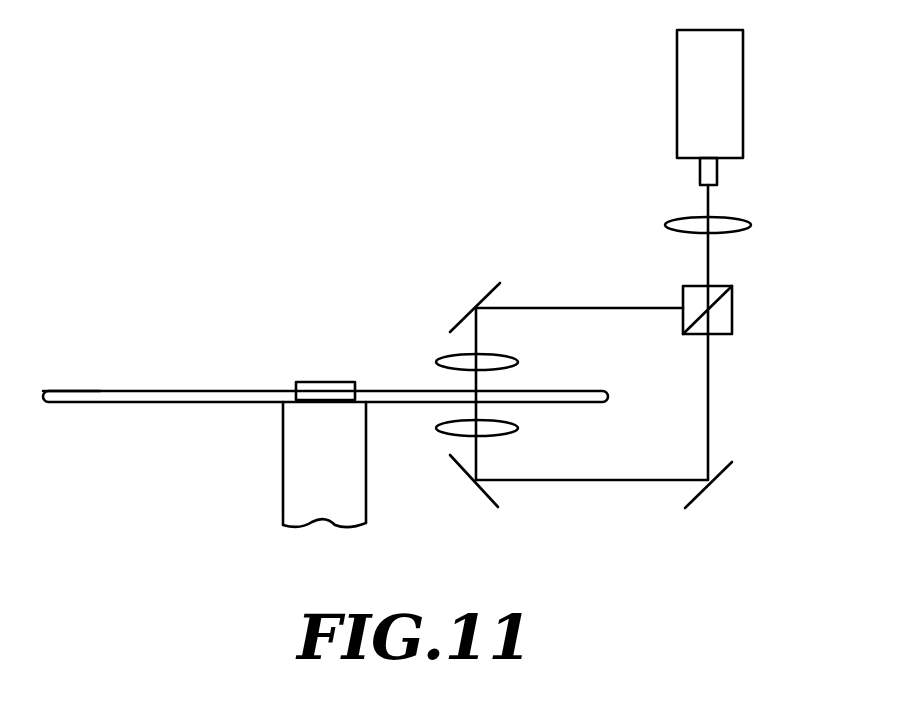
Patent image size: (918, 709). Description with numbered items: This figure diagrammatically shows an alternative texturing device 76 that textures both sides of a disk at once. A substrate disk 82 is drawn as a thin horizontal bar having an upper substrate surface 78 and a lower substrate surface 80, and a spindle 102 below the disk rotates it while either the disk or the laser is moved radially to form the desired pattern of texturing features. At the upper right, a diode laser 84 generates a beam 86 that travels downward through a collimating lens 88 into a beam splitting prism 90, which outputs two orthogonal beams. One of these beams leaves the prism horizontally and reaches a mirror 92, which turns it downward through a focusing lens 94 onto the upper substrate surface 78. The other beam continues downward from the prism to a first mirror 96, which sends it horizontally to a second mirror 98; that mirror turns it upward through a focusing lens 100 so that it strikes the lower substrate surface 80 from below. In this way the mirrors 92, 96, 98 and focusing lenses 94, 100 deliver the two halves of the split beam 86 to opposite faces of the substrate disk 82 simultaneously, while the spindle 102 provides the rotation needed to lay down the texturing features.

The texturing device 76 is at (358, 148).
The substrate surface 78 is at (78, 390).
The substrate surface 80 is at (113, 402).
The substrate disk 82 is at (217, 390).
The diode laser 84 is at (733, 93).
The beam 86 is at (708, 200).
The collimating lens 88 is at (740, 228).
The beam splitting prism 90 is at (732, 318).
The mirror 92 is at (485, 298).
The focusing lens 94 is at (505, 358).
The mirror 96 is at (700, 497).
The mirror 98 is at (483, 495).
The focusing lens 100 is at (500, 432).
The spindle 102 is at (305, 476).